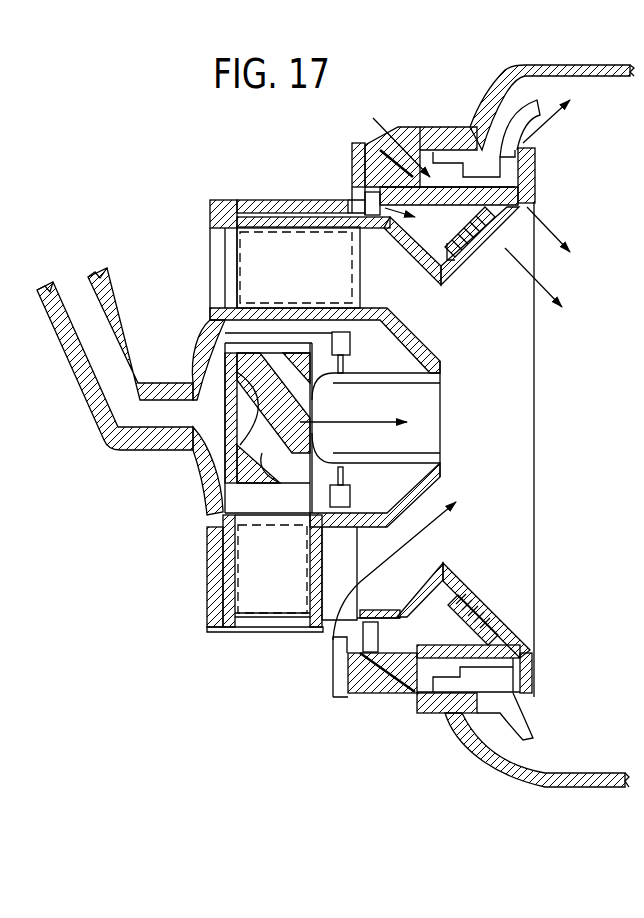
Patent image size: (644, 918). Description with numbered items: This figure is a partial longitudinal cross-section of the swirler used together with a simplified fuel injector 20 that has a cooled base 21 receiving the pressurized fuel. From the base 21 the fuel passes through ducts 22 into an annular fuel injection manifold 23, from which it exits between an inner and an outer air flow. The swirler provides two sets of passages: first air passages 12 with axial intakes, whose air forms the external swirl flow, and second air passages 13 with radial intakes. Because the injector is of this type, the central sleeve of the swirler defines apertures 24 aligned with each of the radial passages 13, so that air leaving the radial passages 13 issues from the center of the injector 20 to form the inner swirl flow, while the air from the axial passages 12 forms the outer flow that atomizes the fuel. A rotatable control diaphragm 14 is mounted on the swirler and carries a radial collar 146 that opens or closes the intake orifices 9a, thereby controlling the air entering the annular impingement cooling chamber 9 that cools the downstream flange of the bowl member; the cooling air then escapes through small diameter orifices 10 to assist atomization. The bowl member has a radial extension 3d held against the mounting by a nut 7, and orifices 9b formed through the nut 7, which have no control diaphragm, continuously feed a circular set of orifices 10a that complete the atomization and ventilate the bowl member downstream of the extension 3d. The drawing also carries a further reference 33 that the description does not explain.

The radial extension 3d is at (523, 680).
The nut 7 is at (440, 712).
The annular chamber 9 is at (420, 622).
The orifices 9a is at (357, 208).
The orifices 9b is at (386, 135).
The small diameter orifices 10 is at (483, 220).
The orifices 10a is at (530, 202).
The first air passages 12 is at (470, 352).
The second air passages 13 is at (272, 485).
The control diaphragm 14 is at (228, 603).
The fuel injector 20 is at (170, 462).
The base 21 is at (192, 492).
The ducts 22 is at (343, 503).
The annular fuel injection manifold 23 is at (418, 465).
The apertures 24 is at (257, 517).
The pin 33 is at (325, 636).
The radial collar 146 is at (350, 697).